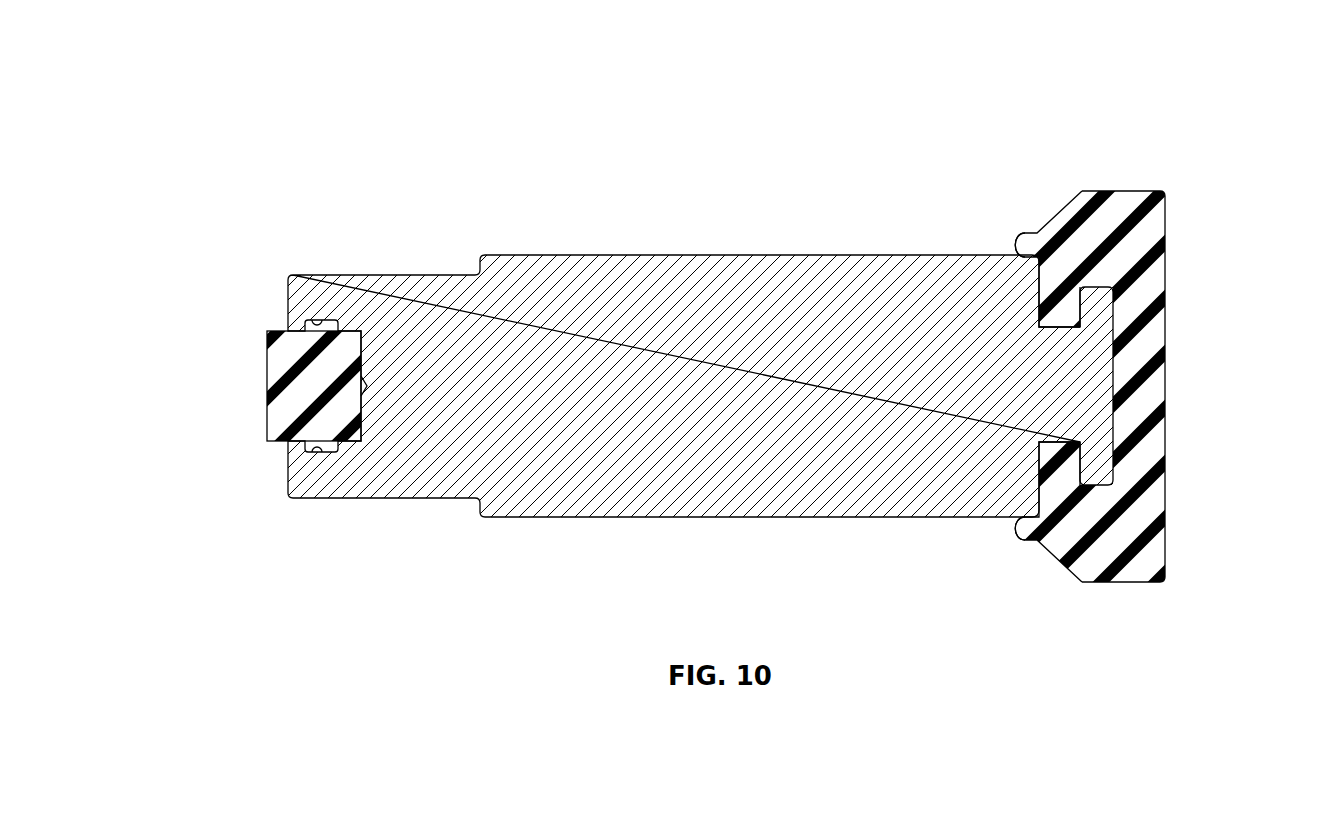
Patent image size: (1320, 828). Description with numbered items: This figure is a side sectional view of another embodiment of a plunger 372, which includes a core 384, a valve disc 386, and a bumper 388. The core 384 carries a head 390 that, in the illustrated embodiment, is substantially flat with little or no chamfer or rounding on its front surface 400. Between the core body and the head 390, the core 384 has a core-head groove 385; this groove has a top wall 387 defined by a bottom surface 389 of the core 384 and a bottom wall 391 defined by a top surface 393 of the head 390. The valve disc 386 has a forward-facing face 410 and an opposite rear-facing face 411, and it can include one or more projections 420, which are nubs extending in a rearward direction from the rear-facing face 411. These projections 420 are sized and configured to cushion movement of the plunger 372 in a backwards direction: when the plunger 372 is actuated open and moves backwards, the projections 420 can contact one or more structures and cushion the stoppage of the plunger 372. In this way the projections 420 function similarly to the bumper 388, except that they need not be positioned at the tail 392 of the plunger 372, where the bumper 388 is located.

The plunger 372 is at (230, 93).
The core 384 is at (706, 244).
The core-head groove 385 is at (1015, 345).
The valve disc 386 is at (1102, 381).
The top wall 387 is at (1037, 478).
The bumper 388 is at (267, 385).
The bottom surface of the core 389 is at (1058, 476).
The head 390 is at (1127, 364).
The bottom wall 391 is at (1062, 480).
The tail 392 is at (288, 295).
The top surface of the head 393 is at (1068, 490).
The front surface 400 is at (1113, 415).
The forward-facing face 410 is at (1165, 274).
The rear-facing face 411 is at (1028, 290).
The projections 420 is at (1026, 230).